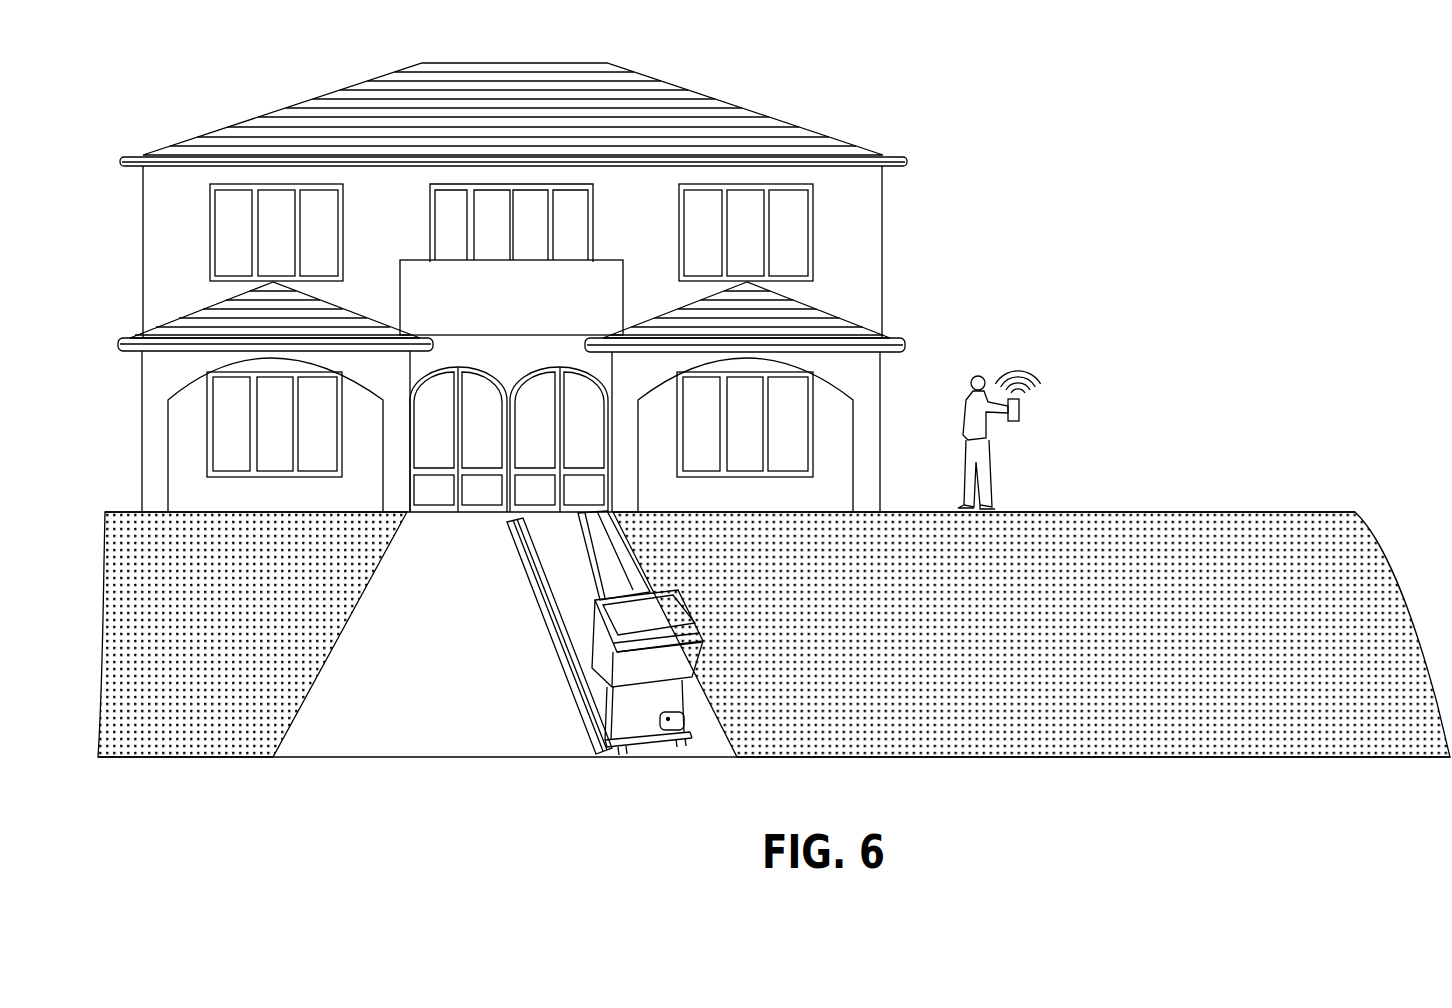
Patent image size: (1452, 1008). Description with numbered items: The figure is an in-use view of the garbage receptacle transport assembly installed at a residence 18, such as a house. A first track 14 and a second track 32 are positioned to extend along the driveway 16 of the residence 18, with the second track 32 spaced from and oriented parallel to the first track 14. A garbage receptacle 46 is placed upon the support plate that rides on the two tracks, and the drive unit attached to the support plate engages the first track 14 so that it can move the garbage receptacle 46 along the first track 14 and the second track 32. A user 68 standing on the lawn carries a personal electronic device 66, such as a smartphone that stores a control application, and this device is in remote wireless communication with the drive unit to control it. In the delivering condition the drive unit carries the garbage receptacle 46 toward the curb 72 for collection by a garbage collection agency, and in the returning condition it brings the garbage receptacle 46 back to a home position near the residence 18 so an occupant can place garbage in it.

The residence 18 is at (858, 137).
The user 68 is at (968, 378).
The personal electronic device 66 is at (1018, 412).
The driveway 16 is at (376, 683).
The first track 14 is at (568, 642).
The second track 32 is at (600, 558).
The garbage receptacle 46 is at (640, 695).
The curb 72 is at (730, 758).